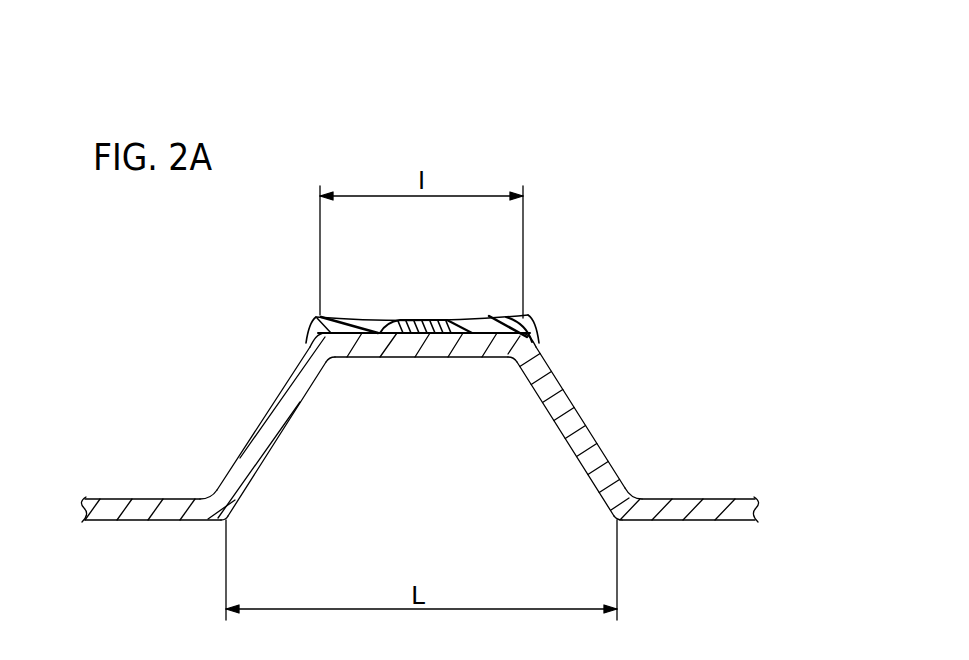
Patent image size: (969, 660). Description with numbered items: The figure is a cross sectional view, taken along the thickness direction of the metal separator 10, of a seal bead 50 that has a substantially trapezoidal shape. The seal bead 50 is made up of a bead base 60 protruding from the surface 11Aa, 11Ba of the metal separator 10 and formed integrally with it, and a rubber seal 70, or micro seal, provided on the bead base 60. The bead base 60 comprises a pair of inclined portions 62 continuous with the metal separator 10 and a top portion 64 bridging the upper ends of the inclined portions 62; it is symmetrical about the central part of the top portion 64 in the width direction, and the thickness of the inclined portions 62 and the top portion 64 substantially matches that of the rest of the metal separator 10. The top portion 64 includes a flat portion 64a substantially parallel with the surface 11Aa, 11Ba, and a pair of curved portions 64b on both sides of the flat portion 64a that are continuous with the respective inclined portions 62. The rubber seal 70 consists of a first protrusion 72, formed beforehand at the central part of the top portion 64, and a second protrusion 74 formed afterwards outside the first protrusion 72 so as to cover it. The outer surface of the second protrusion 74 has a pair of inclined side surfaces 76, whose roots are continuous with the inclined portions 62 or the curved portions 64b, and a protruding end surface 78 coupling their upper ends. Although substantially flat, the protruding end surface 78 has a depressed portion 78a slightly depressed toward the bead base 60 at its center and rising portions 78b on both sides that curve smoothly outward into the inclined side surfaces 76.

The metal separator 10 is at (157, 341).
The surface of the metal separator 11Aa is at (148, 498).
The surface of the metal separator 11Ba is at (687, 509).
The seal bead 50 is at (262, 390).
The bead base 60 is at (585, 407).
The inclined portions 62 is at (252, 460).
The top portion 64 is at (515, 418).
The flat portion 64a is at (427, 355).
The curved portions 64b is at (333, 358).
The rubber seal 70 is at (526, 313).
The first protrusion 72 is at (434, 328).
The second protrusion 74 is at (488, 317).
The inclined side surfaces 76 is at (530, 341).
The protruding end surface 78 is at (428, 260).
The depressed portion 78a is at (416, 321).
The rising portions 78b is at (339, 318).